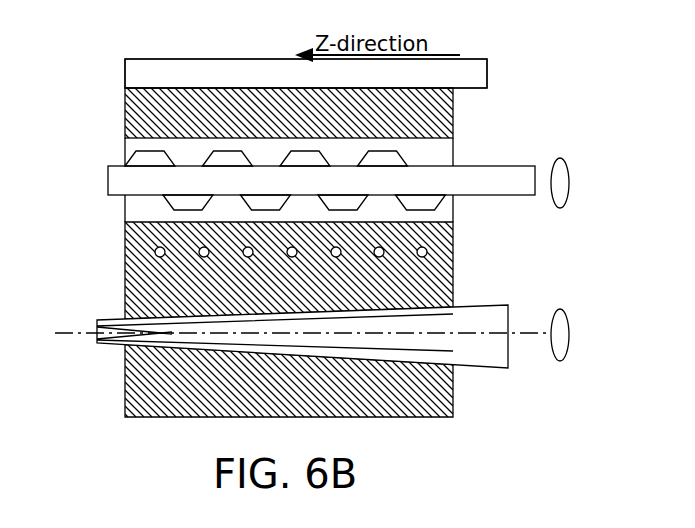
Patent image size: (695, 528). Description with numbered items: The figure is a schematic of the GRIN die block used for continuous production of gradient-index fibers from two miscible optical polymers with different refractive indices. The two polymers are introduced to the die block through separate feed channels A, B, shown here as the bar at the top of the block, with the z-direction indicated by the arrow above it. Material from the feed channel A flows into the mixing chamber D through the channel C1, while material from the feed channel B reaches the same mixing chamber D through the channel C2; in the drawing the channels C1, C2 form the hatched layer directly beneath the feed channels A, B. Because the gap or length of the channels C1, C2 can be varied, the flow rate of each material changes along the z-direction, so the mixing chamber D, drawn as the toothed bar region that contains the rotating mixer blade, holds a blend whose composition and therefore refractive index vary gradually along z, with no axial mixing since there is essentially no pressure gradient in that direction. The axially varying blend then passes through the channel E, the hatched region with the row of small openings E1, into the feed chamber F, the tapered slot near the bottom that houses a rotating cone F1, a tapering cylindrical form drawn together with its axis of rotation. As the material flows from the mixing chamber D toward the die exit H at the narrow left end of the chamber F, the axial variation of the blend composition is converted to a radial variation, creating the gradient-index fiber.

The feed channel A is at (143, 67).
The feed channel B is at (143, 67).
The channel C1 is at (135, 122).
The channel C2 is at (135, 122).
The mixing chamber D is at (437, 156).
The channel E is at (150, 297).
The channels E1 is at (153, 244).
The feed chamber F is at (127, 345).
The rotating cone F1 is at (457, 322).
The die exit H is at (100, 331).